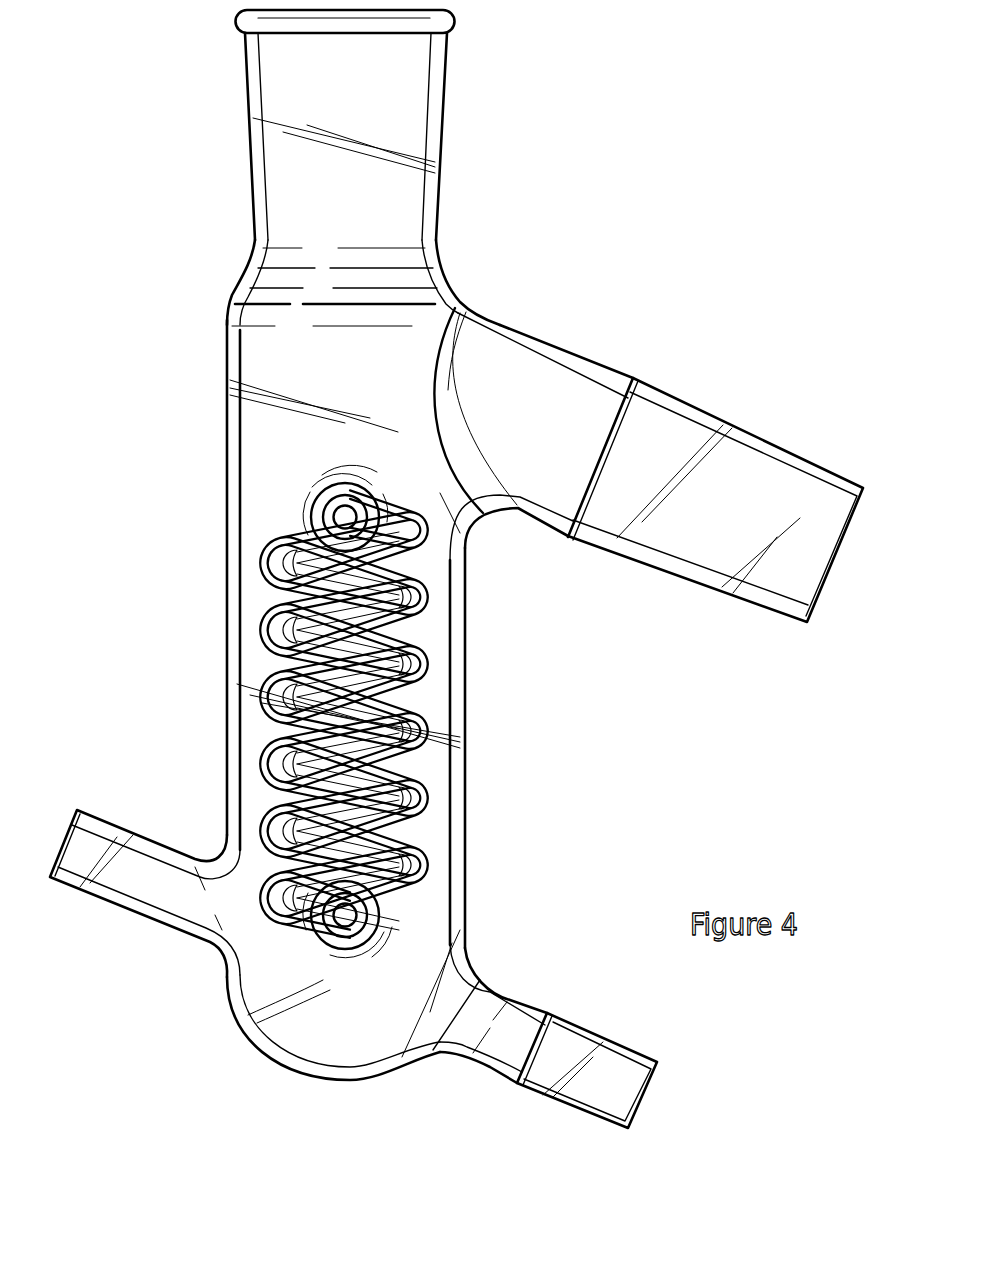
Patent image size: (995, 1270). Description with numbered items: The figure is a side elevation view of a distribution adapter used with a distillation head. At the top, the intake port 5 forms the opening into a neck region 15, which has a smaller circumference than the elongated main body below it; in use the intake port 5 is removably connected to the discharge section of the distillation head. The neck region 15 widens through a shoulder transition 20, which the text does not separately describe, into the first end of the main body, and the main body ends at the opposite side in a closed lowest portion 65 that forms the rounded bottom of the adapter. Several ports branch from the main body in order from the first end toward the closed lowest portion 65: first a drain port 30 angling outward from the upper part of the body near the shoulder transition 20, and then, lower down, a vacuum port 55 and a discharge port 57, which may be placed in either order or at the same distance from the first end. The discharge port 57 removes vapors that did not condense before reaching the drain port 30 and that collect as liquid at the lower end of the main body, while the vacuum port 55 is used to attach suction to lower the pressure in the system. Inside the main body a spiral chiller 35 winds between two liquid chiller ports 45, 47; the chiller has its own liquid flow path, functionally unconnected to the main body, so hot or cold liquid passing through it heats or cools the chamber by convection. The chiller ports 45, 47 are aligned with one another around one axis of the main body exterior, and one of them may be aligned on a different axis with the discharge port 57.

The intake port 5 is at (450, 27).
The neck region 15 is at (427, 128).
The shoulder transition 20 is at (445, 287).
The drain port 30 is at (655, 395).
The spiral chiller 35 is at (263, 635).
The liquid chiller port 45 is at (335, 520).
The liquid chiller port 47 is at (317, 907).
The vacuum port 55 is at (110, 883).
The discharge port 57 is at (590, 1047).
The closed lowest portion 65 is at (273, 1050).